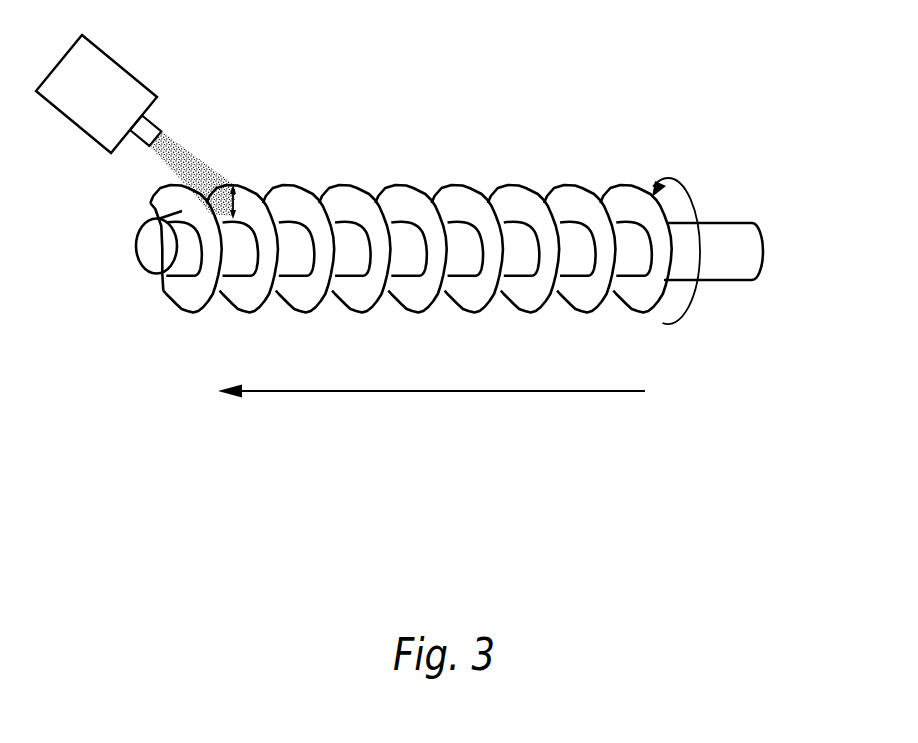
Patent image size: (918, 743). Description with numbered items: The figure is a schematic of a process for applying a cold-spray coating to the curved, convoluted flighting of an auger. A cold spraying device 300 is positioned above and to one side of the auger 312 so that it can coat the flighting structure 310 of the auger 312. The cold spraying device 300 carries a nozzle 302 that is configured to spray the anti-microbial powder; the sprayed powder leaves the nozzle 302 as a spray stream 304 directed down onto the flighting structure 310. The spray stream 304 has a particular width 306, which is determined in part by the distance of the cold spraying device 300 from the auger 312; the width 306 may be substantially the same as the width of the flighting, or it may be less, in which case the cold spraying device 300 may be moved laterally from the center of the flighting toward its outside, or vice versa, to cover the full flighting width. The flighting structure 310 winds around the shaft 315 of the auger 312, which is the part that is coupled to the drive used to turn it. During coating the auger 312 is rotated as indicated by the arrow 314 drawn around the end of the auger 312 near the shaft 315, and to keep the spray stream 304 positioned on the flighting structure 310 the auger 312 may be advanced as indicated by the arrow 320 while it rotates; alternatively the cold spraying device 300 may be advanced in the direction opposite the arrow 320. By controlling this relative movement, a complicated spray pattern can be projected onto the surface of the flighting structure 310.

The cold spraying device 300 is at (120, 66).
The nozzle 302 is at (148, 127).
The spray stream 304 is at (182, 160).
The width 306 is at (250, 188).
The flighting structure 310 is at (184, 204).
The auger 312 is at (473, 206).
The arrow 314 is at (693, 300).
The shaft 315 is at (762, 240).
The arrow 320 is at (440, 392).